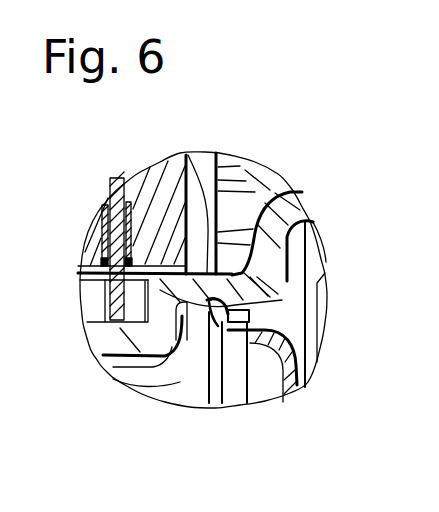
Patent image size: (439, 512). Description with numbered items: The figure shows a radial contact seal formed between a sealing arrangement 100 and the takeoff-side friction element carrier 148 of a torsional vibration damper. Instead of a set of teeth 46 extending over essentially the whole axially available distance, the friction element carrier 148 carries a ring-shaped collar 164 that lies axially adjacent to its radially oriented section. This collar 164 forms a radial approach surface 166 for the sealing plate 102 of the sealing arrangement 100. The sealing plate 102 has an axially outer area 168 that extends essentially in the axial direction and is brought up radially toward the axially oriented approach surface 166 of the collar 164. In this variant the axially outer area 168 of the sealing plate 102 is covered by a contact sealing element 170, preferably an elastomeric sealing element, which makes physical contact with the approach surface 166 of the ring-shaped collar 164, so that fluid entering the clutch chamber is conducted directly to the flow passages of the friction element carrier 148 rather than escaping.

The set of teeth 46 is at (100, 302).
The sealing arrangement 100 is at (304, 350).
The sealing plate 102 is at (295, 375).
The takeoff-side friction element carrier 148 is at (272, 228).
The ring-shaped collar 164 is at (102, 223).
The radial approach surface 166 is at (211, 300).
The axially outer area 168 is at (212, 330).
The contact sealing element 170 is at (190, 160).